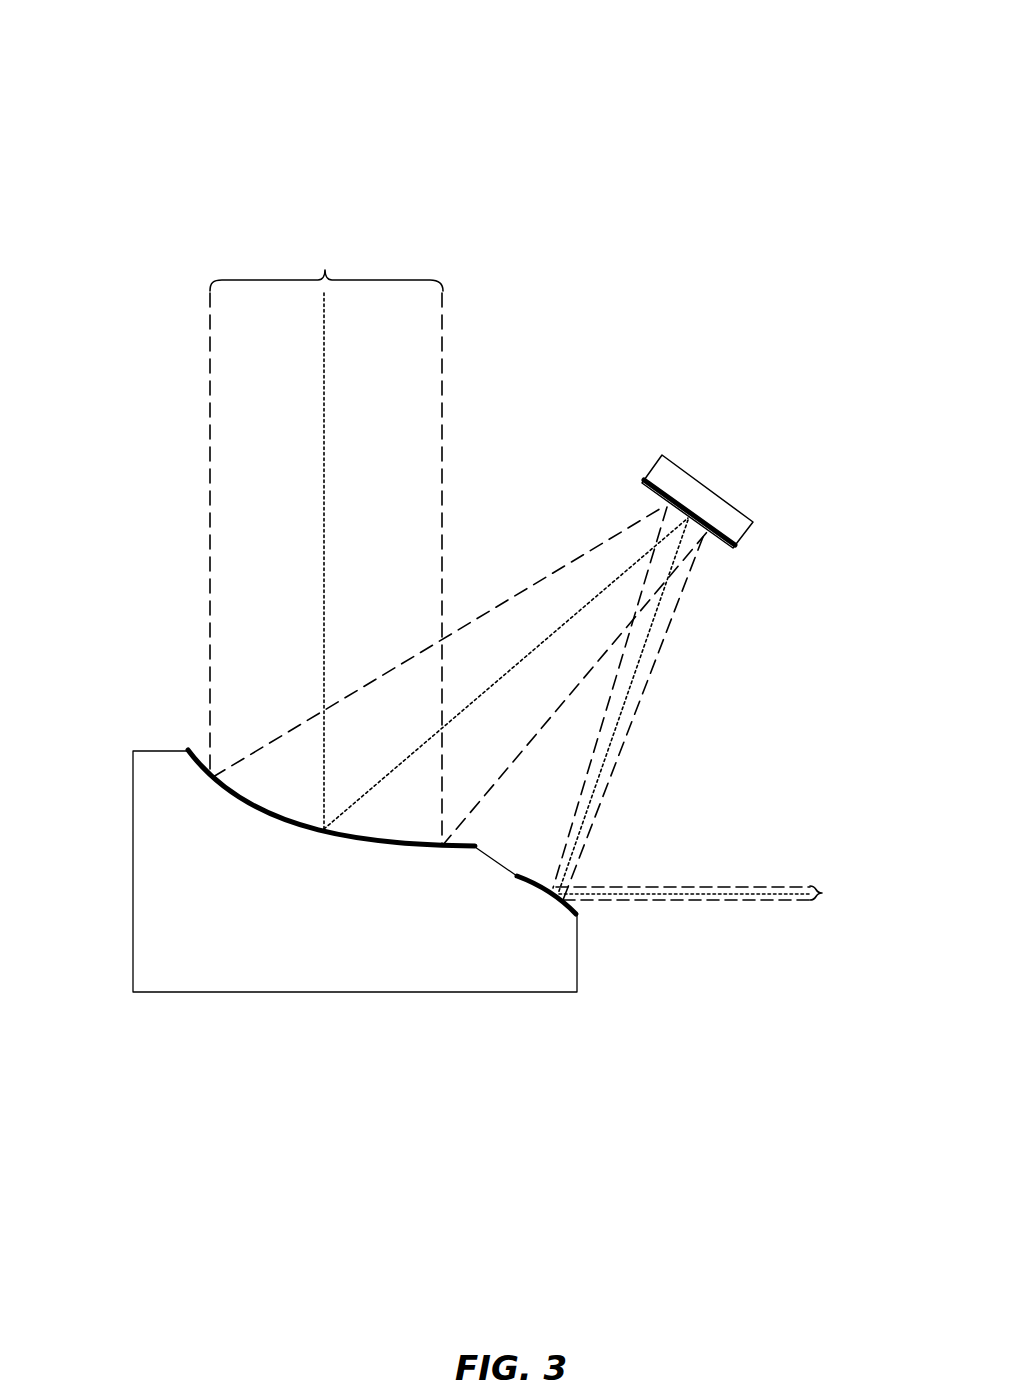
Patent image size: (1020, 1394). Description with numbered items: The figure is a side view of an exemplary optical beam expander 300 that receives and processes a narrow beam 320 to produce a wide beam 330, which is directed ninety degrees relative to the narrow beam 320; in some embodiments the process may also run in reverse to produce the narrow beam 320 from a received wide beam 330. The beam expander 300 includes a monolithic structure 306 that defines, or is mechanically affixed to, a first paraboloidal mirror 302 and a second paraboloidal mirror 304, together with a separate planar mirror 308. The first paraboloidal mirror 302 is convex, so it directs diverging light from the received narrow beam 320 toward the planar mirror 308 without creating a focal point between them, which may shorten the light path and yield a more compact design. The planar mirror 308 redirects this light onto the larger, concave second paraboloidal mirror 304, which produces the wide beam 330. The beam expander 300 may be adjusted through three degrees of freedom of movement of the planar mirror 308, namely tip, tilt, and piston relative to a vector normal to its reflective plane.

The optical beam expander 300 is at (100, 104).
The first paraboloidal mirror 302 is at (576, 916).
The second paraboloidal mirror 304 is at (198, 762).
The monolithic structure 306 is at (320, 994).
The planar mirror 308 is at (723, 548).
The narrow beam 320 is at (822, 893).
The wide beam 330 is at (325, 270).